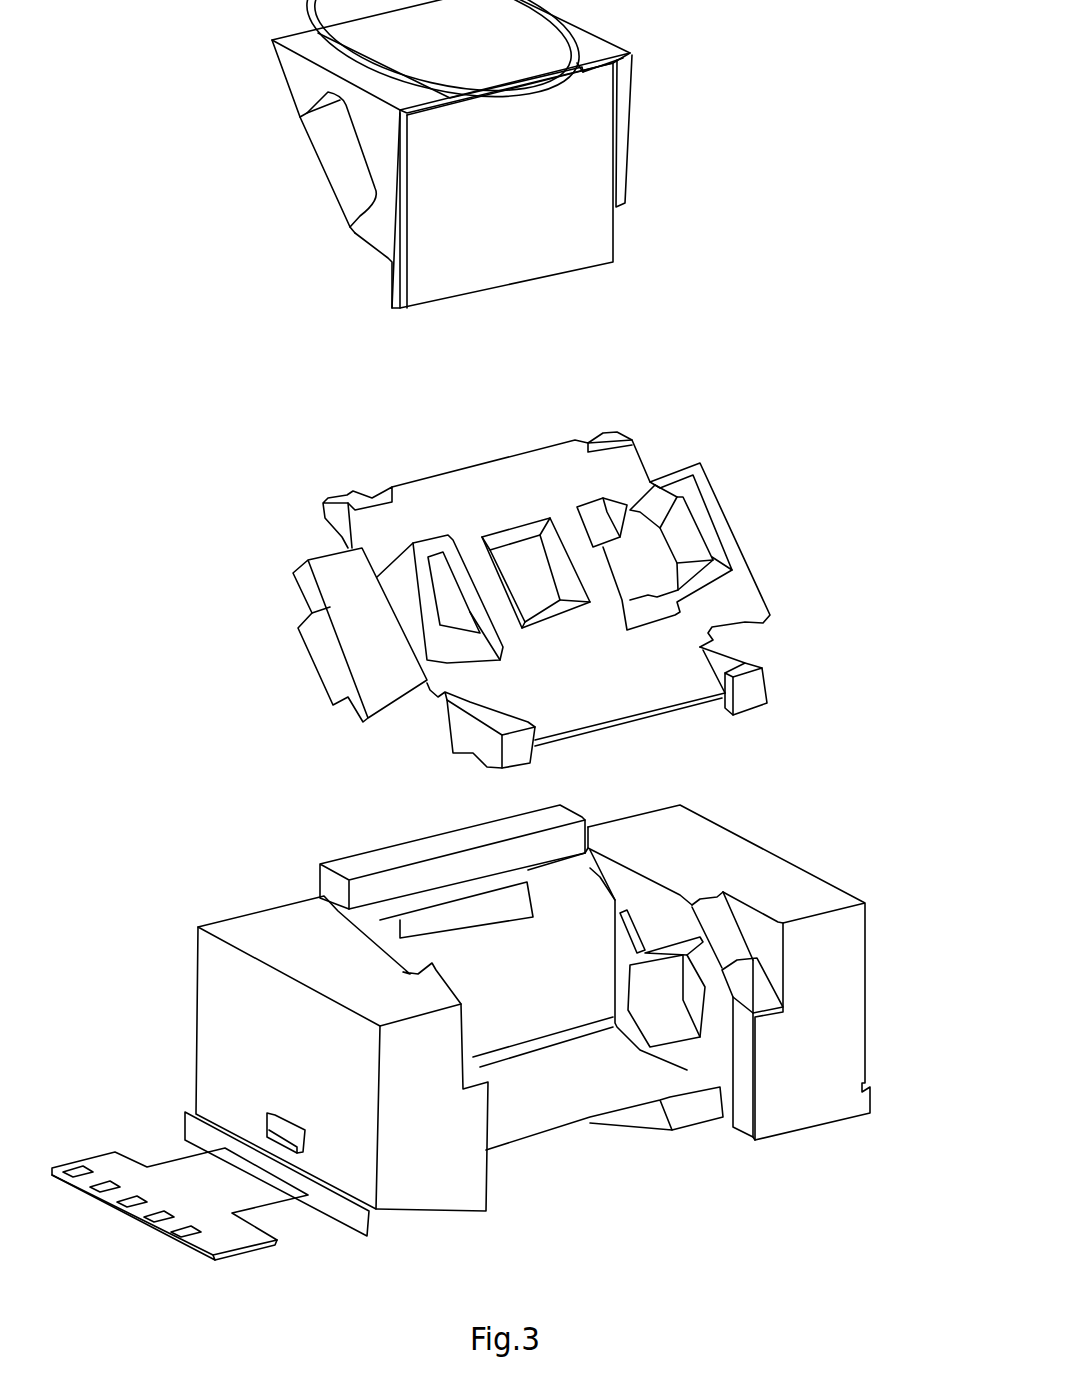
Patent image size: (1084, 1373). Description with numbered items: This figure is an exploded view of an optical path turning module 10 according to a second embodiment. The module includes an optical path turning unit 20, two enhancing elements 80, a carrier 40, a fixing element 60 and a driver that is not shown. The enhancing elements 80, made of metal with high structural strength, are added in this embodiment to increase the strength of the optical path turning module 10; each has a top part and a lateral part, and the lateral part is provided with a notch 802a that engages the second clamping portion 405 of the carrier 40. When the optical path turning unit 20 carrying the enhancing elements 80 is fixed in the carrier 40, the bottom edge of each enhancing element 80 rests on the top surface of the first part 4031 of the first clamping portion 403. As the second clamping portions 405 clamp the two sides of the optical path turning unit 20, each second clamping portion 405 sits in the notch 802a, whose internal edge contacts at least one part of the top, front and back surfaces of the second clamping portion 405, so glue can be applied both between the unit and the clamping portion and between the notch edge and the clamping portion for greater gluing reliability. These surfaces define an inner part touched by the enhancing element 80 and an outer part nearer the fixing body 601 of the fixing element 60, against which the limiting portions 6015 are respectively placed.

The optical path turning module 10 is at (87, 38).
The enhancing element 80 is at (598, 50).
The notch 802a is at (338, 143).
The optical path turning unit 20 is at (385, 272).
The carrier 40 is at (571, 572).
The second clamping portion 405 is at (712, 513).
The first part 4031 is at (730, 655).
The first clamping portion 403 is at (763, 702).
The fixing element 60 is at (502, 1010).
The fixing body 601 is at (222, 1043).
The limiting portion 6015 is at (750, 883).